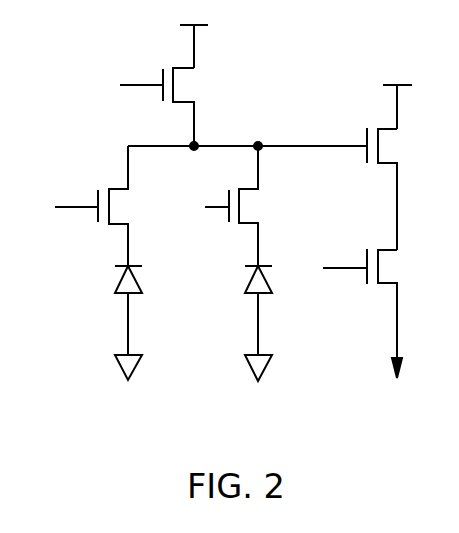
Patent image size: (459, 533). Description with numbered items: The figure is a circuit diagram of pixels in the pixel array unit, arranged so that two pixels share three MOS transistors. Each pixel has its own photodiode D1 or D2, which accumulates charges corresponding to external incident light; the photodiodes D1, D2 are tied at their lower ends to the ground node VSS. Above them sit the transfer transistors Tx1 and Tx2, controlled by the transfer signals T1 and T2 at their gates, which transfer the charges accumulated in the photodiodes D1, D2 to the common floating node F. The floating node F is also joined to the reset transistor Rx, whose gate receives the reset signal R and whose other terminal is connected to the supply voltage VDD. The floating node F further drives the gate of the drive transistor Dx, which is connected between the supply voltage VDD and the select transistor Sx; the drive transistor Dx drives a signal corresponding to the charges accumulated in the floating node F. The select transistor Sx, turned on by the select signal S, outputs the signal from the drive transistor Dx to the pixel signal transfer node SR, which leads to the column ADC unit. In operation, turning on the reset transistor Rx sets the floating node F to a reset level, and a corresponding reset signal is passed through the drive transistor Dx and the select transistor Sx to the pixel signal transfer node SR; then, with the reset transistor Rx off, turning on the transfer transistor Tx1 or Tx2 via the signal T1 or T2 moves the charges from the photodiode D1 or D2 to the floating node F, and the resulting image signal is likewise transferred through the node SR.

The reset transistor Rx is at (194, 107).
The reset signal R is at (130, 85).
The supply voltage VDD is at (301, 71).
The floating node F is at (226, 132).
The first transfer transistor Tx1 is at (129, 206).
The first transfer signal T1 is at (58, 207).
The first photodiode D1 is at (110, 310).
The second transfer transistor Tx2 is at (266, 206).
The second transfer signal T2 is at (201, 207).
The second photodiode D2 is at (240, 310).
The ground voltage VSS is at (187, 382).
The drive transistor Dx is at (397, 189).
The select transistor Sx is at (397, 304).
The select signal S is at (337, 268).
The pixel signal transfer node SR is at (395, 383).